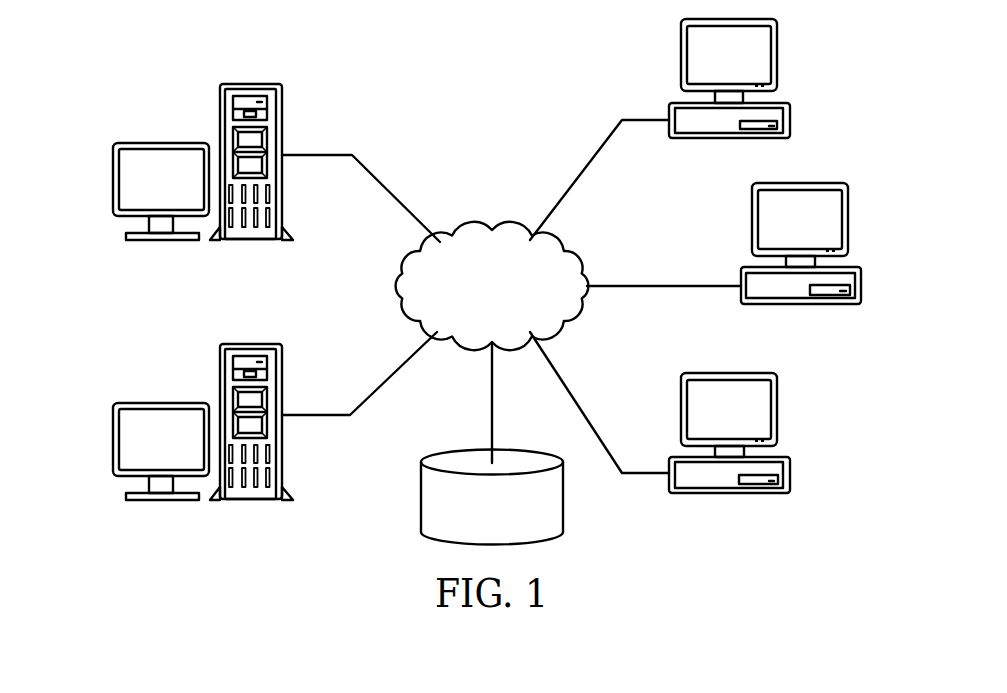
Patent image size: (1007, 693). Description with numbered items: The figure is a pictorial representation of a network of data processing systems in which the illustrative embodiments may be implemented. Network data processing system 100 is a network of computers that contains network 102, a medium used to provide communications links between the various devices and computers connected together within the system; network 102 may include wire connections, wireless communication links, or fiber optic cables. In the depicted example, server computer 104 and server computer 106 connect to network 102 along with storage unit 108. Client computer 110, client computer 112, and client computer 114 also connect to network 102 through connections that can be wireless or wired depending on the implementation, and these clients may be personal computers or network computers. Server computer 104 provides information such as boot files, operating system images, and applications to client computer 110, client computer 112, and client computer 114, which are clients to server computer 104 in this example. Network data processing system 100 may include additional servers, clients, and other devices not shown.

The network data processing system 100 is at (354, 61).
The network 102 is at (465, 230).
The server computer 104 is at (113, 180).
The server computer 106 is at (113, 437).
The storage unit 108 is at (421, 497).
The client computer 110 is at (790, 110).
The client computer 112 is at (862, 295).
The client computer 114 is at (790, 483).